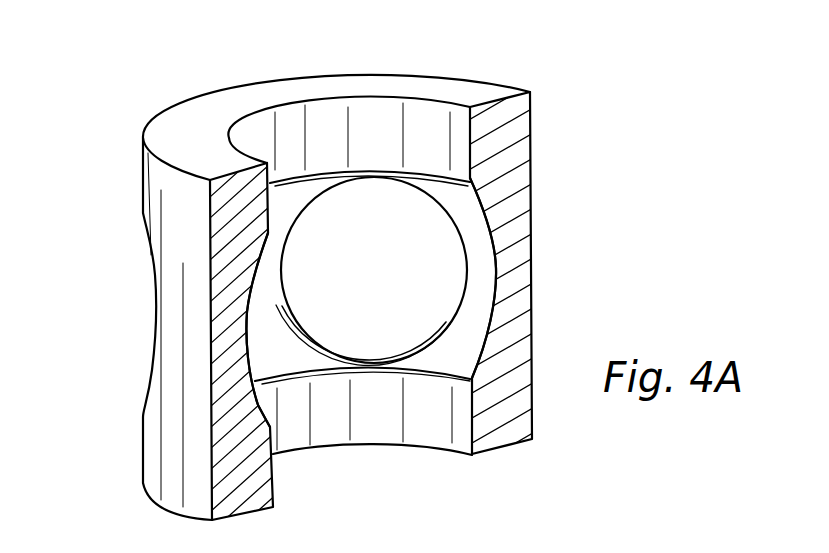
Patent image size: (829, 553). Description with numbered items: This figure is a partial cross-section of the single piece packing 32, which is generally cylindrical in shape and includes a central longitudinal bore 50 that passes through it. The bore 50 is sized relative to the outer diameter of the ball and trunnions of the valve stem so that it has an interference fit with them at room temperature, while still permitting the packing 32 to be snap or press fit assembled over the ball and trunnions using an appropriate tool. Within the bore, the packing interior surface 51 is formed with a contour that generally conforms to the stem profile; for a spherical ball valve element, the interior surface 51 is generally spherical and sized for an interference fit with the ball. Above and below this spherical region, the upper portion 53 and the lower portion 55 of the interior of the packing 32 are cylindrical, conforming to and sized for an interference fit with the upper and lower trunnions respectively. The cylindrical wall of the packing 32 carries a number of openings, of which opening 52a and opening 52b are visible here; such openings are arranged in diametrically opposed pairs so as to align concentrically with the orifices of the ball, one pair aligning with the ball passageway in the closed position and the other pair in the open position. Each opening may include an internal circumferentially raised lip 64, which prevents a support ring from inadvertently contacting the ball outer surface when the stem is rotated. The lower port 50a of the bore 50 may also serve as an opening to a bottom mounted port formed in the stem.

The single piece packing 32 is at (360, 298).
The central longitudinal bore 50 is at (296, 298).
The lower port 50a is at (427, 450).
The packing interior surface 51 is at (265, 343).
The opening 52a is at (153, 282).
The opening 52b is at (450, 238).
The upper portion of the interior 53 is at (322, 142).
The lower portion of the interior 55 is at (338, 427).
The internal circumferentially raised lip 64 is at (375, 364).